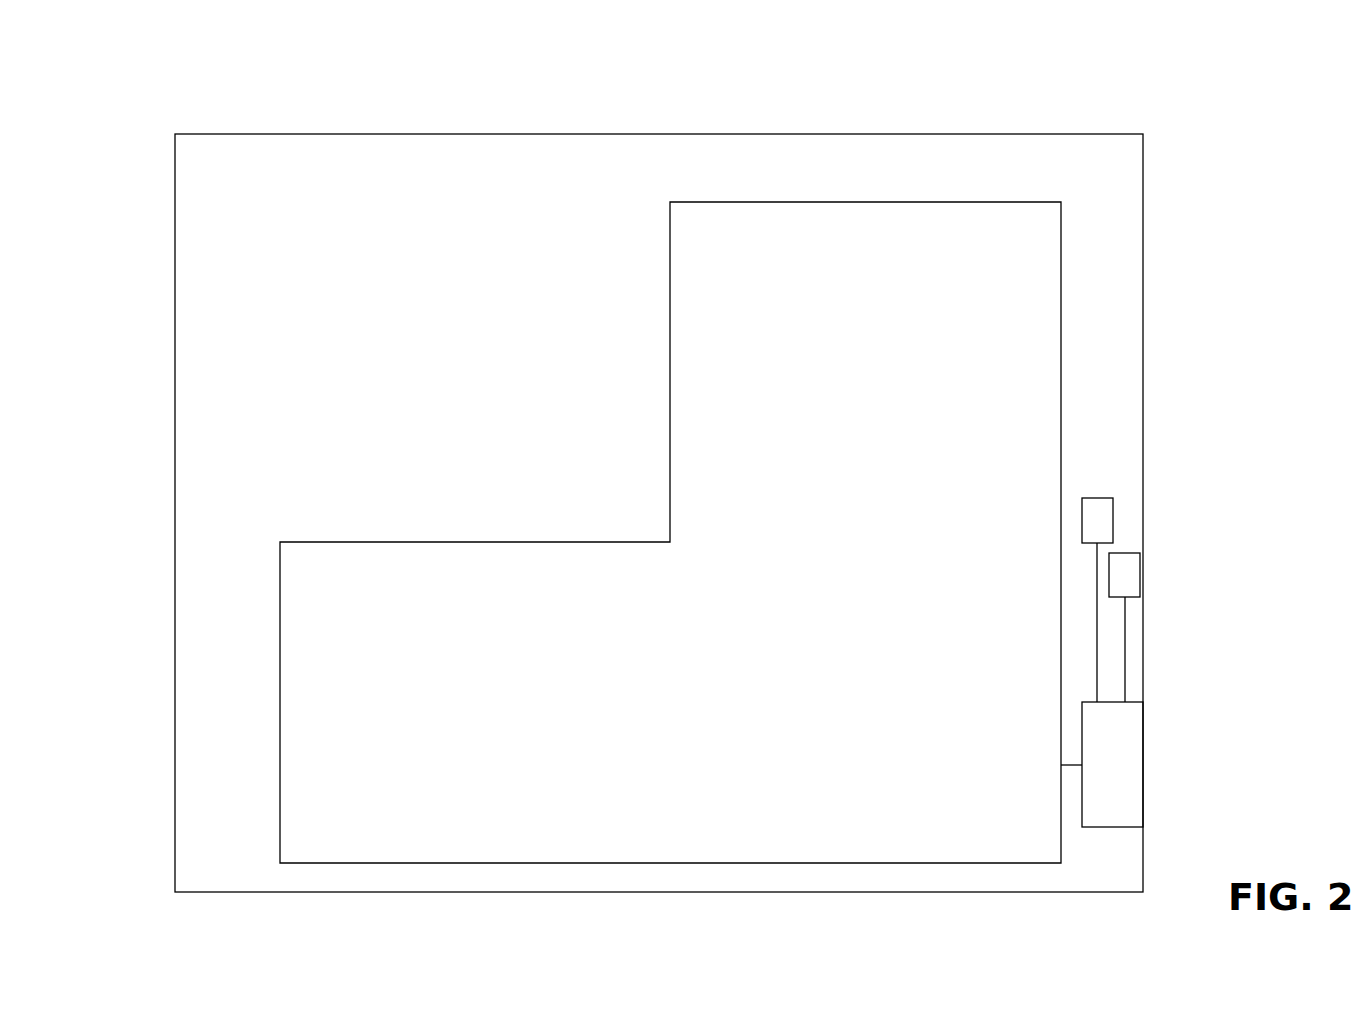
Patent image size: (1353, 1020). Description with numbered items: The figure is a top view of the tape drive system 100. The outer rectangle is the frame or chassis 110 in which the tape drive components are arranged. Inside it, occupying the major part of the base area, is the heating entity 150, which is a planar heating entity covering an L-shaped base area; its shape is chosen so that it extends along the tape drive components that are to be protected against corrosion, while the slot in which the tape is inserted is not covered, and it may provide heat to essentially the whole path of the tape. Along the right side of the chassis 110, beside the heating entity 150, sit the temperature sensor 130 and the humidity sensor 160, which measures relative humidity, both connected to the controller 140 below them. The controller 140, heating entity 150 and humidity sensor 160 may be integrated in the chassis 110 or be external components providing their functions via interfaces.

The tape drive system 100 is at (1122, 120).
The frame or chassis 110 is at (647, 134).
The heating entity 150 is at (1061, 345).
The temperature sensor 130 is at (1113, 513).
The humidity sensor 160 is at (1133, 553).
The controller 140 is at (1113, 827).